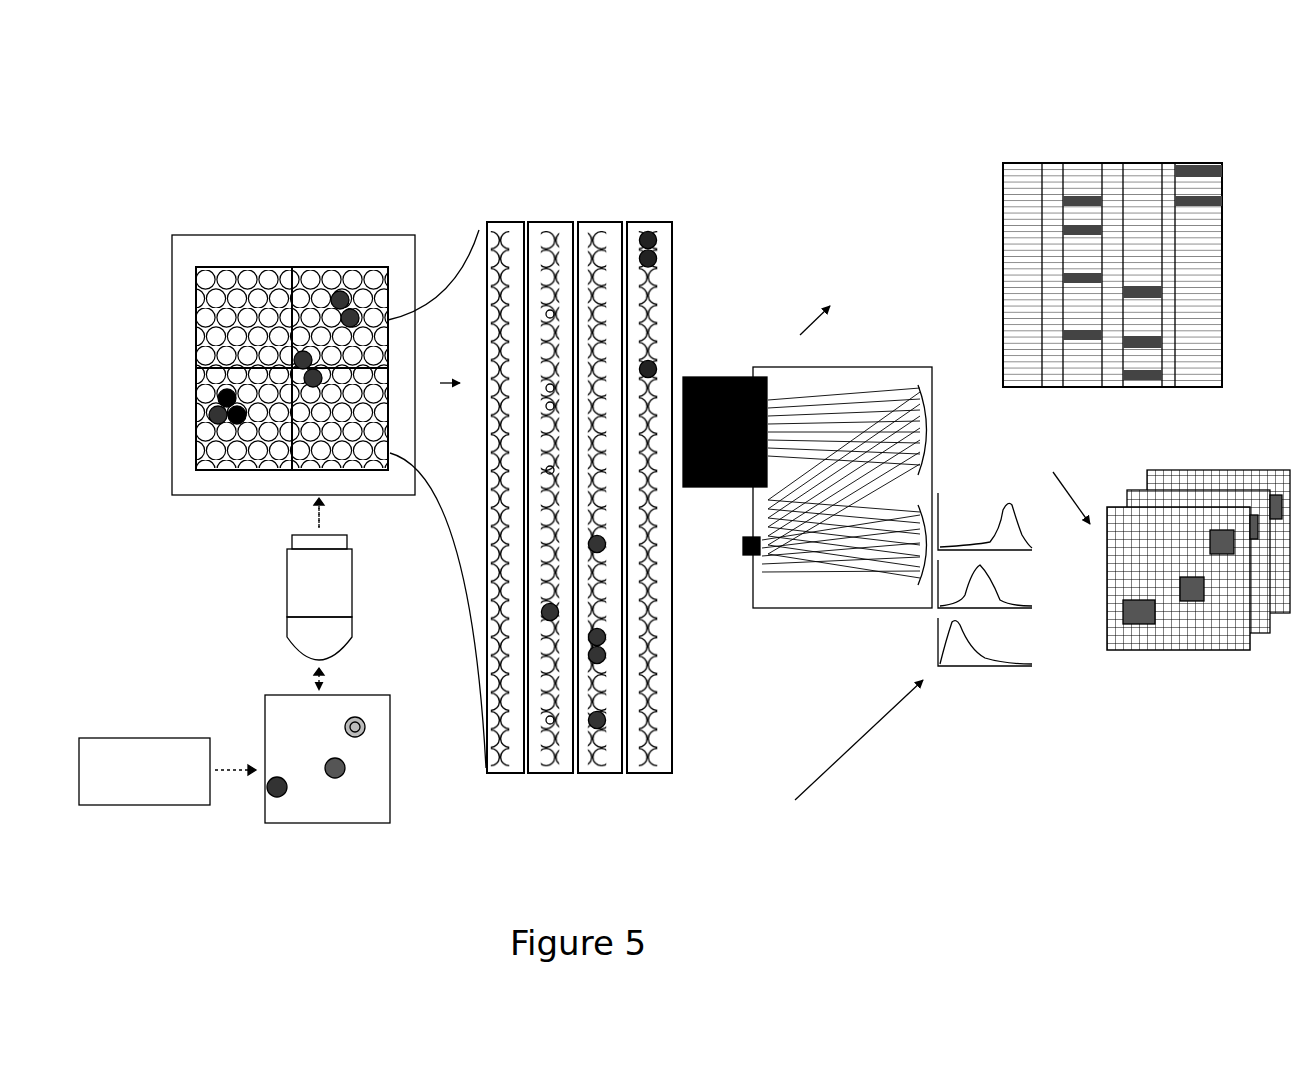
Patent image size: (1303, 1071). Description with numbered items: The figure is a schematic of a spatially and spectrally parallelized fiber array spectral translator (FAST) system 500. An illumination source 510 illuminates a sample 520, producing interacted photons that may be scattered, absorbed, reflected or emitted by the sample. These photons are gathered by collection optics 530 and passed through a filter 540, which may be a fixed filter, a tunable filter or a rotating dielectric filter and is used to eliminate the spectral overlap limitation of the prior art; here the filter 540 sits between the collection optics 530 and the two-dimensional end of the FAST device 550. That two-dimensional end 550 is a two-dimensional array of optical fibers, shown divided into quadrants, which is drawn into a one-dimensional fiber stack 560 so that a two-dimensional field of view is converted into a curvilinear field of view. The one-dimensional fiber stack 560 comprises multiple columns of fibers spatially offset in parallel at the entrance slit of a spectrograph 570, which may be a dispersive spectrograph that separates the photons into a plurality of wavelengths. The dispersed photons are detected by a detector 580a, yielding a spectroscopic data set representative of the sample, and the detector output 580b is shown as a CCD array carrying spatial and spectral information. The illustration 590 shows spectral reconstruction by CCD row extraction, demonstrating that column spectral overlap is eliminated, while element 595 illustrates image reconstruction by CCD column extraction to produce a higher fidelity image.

The system 500 is at (127, 82).
The illumination source 510 is at (167, 785).
The sample 520 is at (374, 759).
The collection optics 530 is at (372, 594).
The filter 540 is at (291, 250).
The two-dimensional end of fiber array spectral translator device 550 is at (311, 499).
The one-dimensional fiber stack 560 is at (585, 489).
The spectrograph 570 is at (837, 436).
The detector 580a is at (725, 407).
The detector output 580b is at (1120, 263).
The spectral reconstruction illustration 590 is at (878, 688).
The image reconstruction illustration 595 is at (1122, 626).